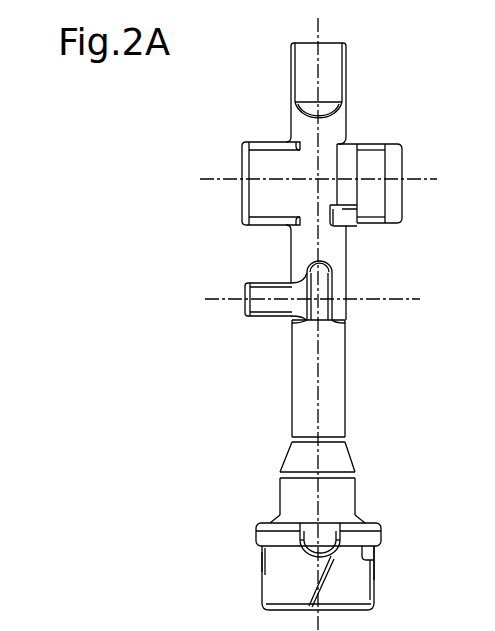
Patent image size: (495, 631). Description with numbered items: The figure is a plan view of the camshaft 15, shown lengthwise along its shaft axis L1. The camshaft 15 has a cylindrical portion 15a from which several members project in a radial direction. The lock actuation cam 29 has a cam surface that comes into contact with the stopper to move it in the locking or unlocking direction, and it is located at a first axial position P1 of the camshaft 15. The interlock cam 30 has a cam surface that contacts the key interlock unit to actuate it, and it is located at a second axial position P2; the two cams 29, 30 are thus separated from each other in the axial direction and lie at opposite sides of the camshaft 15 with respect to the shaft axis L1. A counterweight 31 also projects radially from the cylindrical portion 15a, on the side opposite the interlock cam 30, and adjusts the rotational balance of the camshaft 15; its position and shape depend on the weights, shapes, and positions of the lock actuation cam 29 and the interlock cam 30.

The shaft axis L1 is at (318, 21).
The camshaft 15 is at (291, 389).
The cylindrical portion 15a is at (345, 380).
The lock actuation cam 29 is at (247, 308).
The interlock cam 30 is at (404, 160).
The counterweight 31 is at (242, 162).
The first axial position P1 is at (405, 299).
The second axial position P2 is at (420, 180).